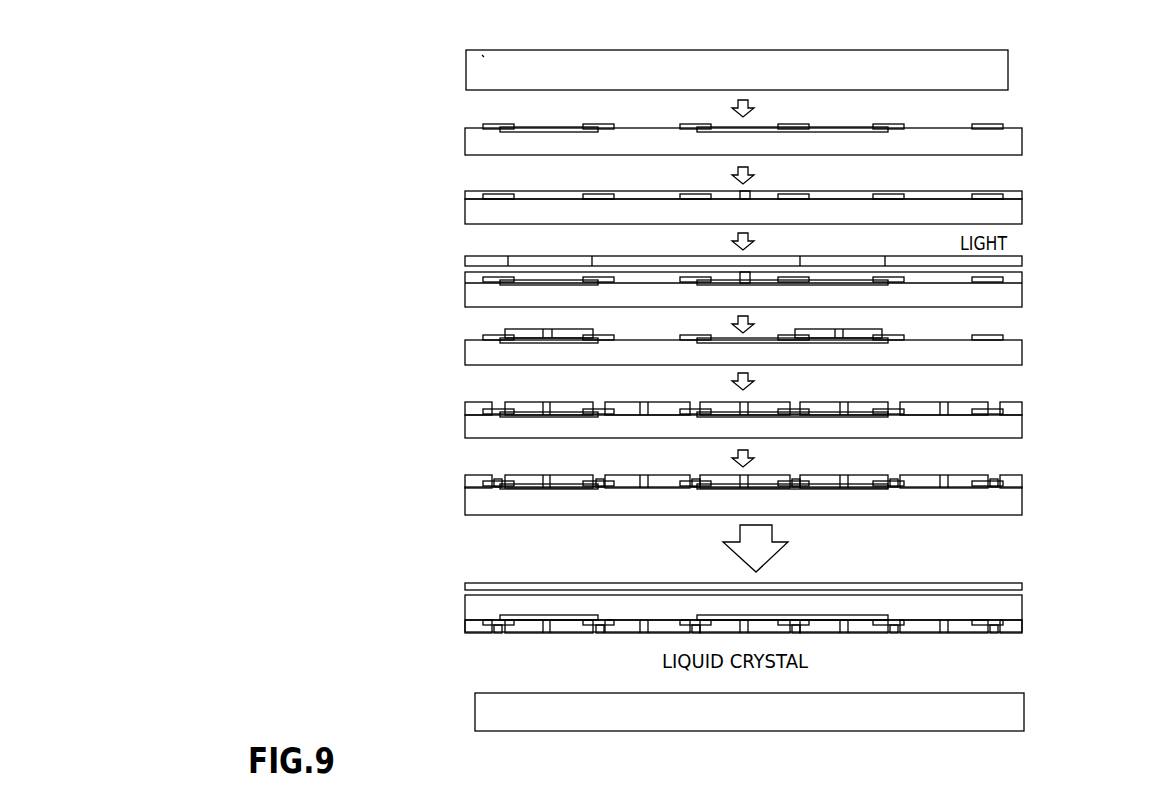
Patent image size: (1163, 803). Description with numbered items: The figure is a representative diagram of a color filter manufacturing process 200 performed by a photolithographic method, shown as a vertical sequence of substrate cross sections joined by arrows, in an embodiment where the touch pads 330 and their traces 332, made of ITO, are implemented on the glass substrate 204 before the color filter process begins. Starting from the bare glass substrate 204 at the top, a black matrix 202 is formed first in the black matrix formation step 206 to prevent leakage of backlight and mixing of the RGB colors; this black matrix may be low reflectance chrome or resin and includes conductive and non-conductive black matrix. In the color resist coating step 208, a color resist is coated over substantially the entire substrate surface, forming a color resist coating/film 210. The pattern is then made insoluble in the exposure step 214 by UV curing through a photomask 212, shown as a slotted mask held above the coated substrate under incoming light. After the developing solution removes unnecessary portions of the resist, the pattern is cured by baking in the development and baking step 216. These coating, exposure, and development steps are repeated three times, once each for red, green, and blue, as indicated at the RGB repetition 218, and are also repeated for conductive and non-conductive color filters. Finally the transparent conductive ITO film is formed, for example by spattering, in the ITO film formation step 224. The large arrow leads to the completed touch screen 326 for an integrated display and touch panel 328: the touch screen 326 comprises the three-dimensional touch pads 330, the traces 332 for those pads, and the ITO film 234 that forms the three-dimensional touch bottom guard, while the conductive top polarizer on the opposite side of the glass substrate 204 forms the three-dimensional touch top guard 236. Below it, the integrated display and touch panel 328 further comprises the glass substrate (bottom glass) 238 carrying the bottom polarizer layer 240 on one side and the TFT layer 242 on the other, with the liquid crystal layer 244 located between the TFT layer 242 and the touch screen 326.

The color filter manufacturing process 200 is at (408, 105).
The black matrix 202 is at (600, 123).
The glass substrate 204 is at (995, 76).
The black matrix formation step 206 is at (777, 128).
The color resist coating step 208 is at (777, 197).
The color resist coating/film 210 is at (843, 195).
The photomask 212 is at (530, 260).
The exposure step 214 is at (757, 268).
The development and baking step 216 is at (1032, 326).
The RGB repetition 218 is at (1032, 395).
The ITO film formation step 224 is at (1032, 470).
The ITO film 234 is at (988, 637).
The 3D touch top guard 236 is at (945, 576).
The glass substrate (bottom glass) 238 is at (1015, 718).
The bottom polarizer layer 240 is at (979, 746).
The TFT layer 242 is at (947, 688).
The liquid crystal layer 244 is at (486, 666).
The touch screen 326 is at (798, 610).
The integrated display and touch panel 328 is at (715, 669).
The touch pads 330 is at (779, 37).
The traces 332 is at (482, 55).